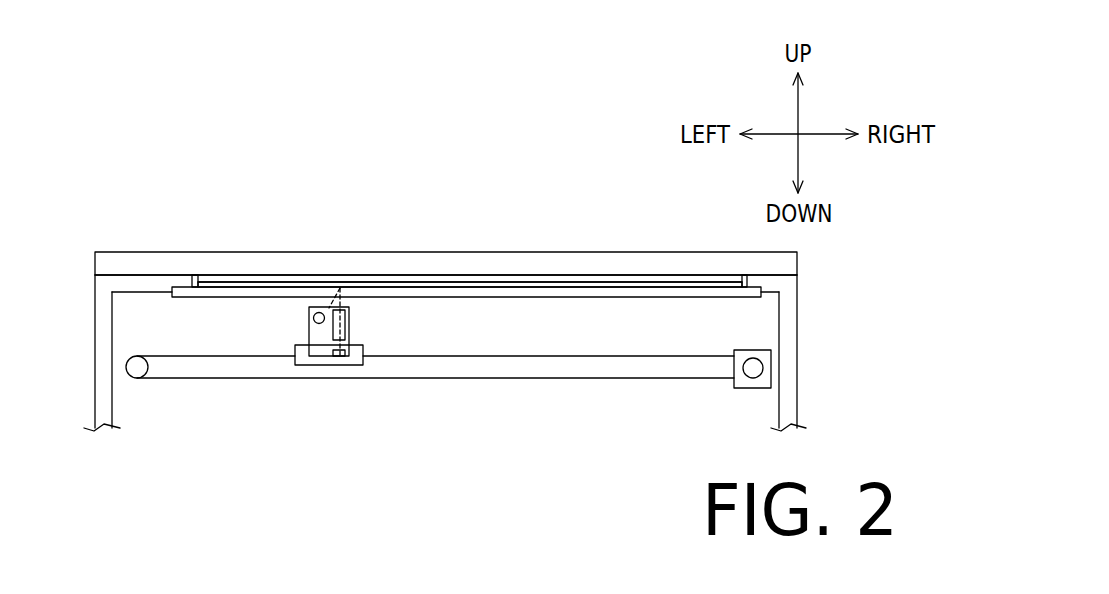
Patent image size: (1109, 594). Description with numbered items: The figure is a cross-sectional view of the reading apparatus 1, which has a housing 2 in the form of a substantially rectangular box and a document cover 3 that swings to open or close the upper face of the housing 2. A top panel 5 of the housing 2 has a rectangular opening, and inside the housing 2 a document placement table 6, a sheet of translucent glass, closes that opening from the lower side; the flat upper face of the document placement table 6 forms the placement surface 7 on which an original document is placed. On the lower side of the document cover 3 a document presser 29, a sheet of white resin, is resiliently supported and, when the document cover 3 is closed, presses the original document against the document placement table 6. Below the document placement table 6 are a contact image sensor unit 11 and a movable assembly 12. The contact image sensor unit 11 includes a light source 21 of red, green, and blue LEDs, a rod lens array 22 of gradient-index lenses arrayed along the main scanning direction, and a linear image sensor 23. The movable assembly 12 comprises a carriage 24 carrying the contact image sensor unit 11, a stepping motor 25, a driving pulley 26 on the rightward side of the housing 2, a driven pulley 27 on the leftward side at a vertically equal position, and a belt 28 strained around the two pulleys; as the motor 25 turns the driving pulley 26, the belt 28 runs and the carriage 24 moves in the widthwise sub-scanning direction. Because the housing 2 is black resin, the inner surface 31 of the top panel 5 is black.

The reading apparatus 1 is at (228, 220).
The housing 2 is at (456, 316).
The document cover 3 is at (590, 262).
The top panel 5 is at (145, 278).
The document placement table 6 is at (562, 298).
The placement surface 7 is at (662, 287).
The contact image sensor unit 11 is at (356, 368).
The movable assembly 12 is at (446, 409).
The light source 21 is at (312, 318).
The rod lens array 22 is at (350, 320).
The image sensor 23 is at (341, 365).
The carriage 24 is at (299, 365).
The motor 25 is at (752, 389).
The driving pulley 26 is at (745, 372).
The driven pulley 27 is at (137, 378).
The belt 28 is at (498, 380).
The document presser 29 is at (483, 285).
The inner surface 31 is at (112, 293).